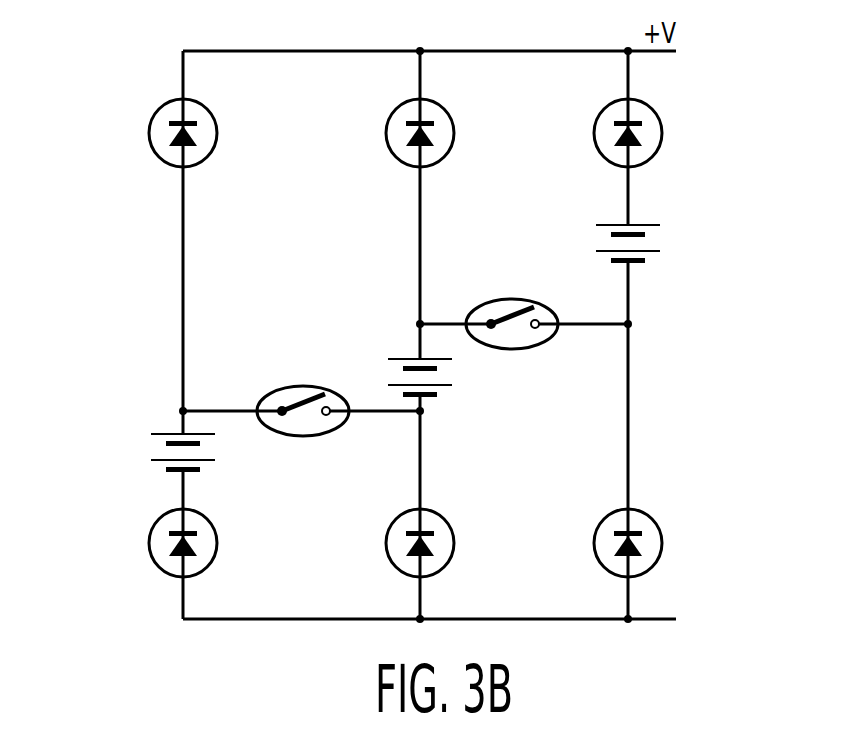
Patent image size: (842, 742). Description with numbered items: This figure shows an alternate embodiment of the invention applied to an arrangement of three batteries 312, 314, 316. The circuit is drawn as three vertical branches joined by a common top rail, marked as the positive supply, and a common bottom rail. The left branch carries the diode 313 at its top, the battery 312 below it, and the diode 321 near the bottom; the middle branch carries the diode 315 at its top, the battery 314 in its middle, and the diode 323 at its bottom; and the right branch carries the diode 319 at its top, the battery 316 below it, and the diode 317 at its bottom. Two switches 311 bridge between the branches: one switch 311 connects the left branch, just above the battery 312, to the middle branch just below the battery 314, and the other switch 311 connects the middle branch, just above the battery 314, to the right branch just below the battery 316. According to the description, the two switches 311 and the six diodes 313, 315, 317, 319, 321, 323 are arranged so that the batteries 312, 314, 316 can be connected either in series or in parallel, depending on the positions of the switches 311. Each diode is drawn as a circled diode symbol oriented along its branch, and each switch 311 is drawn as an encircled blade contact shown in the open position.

The switch 311 is at (310, 437).
The battery 312 is at (150, 447).
The diode 313 is at (150, 123).
The battery 314 is at (388, 367).
The diode 315 is at (387, 123).
The battery 316 is at (653, 238).
The diode 317 is at (662, 542).
The diode 319 is at (660, 150).
The diode 321 is at (150, 528).
The diode 323 is at (455, 540).